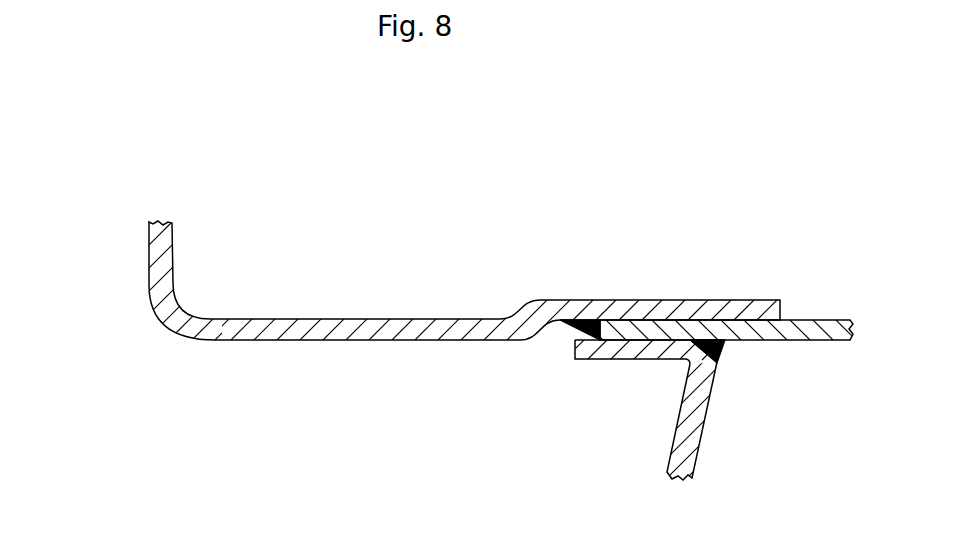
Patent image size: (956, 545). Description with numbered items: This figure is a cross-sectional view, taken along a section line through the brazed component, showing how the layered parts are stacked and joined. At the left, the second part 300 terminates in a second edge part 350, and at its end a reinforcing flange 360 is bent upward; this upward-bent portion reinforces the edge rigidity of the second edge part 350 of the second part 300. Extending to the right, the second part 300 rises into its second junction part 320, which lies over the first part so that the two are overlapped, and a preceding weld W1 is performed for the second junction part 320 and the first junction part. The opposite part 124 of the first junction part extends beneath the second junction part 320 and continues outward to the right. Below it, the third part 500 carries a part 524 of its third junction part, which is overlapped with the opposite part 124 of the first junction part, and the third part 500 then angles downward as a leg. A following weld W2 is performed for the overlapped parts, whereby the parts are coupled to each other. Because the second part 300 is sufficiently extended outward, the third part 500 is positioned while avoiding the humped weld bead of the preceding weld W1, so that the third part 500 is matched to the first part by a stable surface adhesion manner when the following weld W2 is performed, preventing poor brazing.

The second edge part 350 is at (126, 238).
The reinforcing flange 360 is at (176, 247).
The second part 300 is at (294, 318).
The second junction part 320 is at (664, 306).
The opposite part of the first junction part 124 is at (816, 320).
The preceding weld W1 is at (566, 334).
The part of the third junction part 524 is at (606, 361).
The following weld W2 is at (724, 352).
The third part 500 is at (697, 452).